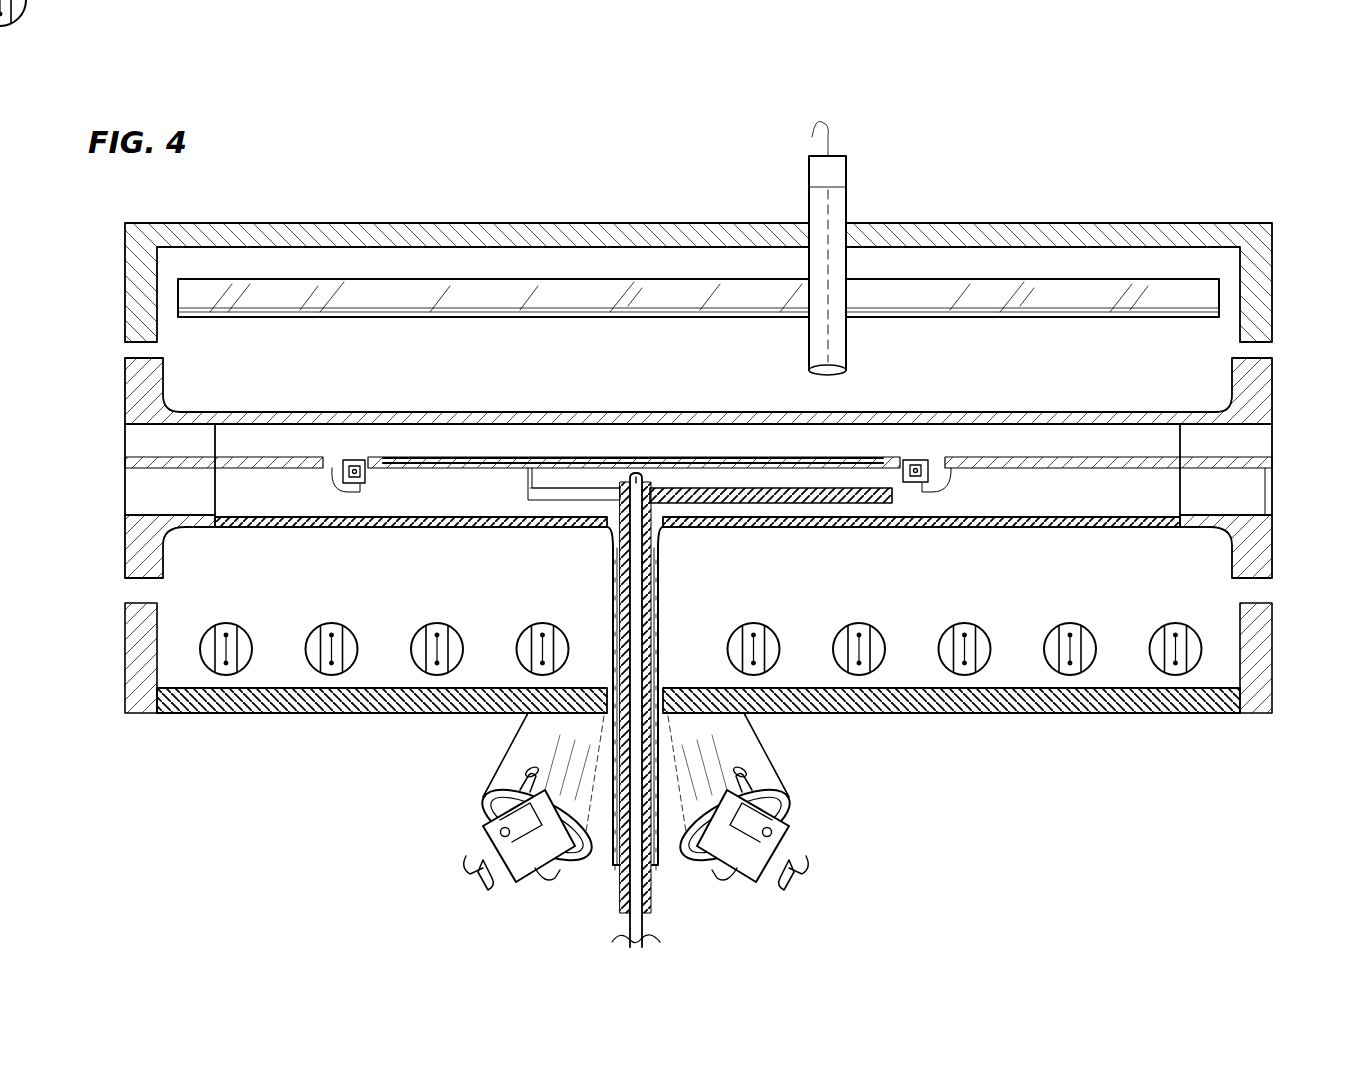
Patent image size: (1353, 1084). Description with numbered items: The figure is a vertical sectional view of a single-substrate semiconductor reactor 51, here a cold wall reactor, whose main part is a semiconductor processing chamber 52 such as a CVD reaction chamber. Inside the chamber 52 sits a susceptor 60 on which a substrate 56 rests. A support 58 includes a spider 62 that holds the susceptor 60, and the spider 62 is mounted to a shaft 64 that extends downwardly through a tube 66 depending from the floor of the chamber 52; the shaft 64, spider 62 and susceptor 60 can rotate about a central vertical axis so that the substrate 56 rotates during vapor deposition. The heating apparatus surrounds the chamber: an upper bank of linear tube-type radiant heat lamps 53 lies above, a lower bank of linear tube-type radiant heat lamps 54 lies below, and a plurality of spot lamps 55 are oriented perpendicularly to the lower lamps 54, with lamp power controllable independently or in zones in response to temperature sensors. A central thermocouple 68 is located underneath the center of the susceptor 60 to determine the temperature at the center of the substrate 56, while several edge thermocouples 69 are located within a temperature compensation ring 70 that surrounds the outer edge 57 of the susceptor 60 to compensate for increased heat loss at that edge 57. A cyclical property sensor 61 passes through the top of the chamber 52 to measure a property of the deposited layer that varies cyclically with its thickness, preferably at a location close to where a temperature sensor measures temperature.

The single-substrate semiconductor reactor 51 is at (1205, 190).
The semiconductor processing chamber 52 is at (1278, 385).
The upper bank of linear tube-type radiant heat lamps 53 is at (615, 290).
The lower bank of linear tube-type radiant heat lamps 54 is at (1046, 660).
The spot lamps 55 is at (590, 860).
The substrate 56 is at (602, 457).
The outer edge of the susceptor 57 is at (372, 468).
The support 58 is at (505, 497).
The susceptor 60 is at (390, 482).
The cyclical property sensor 61 is at (838, 170).
The spider 62 is at (522, 480).
The shaft 64 is at (648, 593).
The tube 66 is at (660, 633).
The central thermocouple 68 is at (662, 478).
The edge thermocouples 69 is at (356, 484).
The temperature compensation ring 70 is at (931, 460).